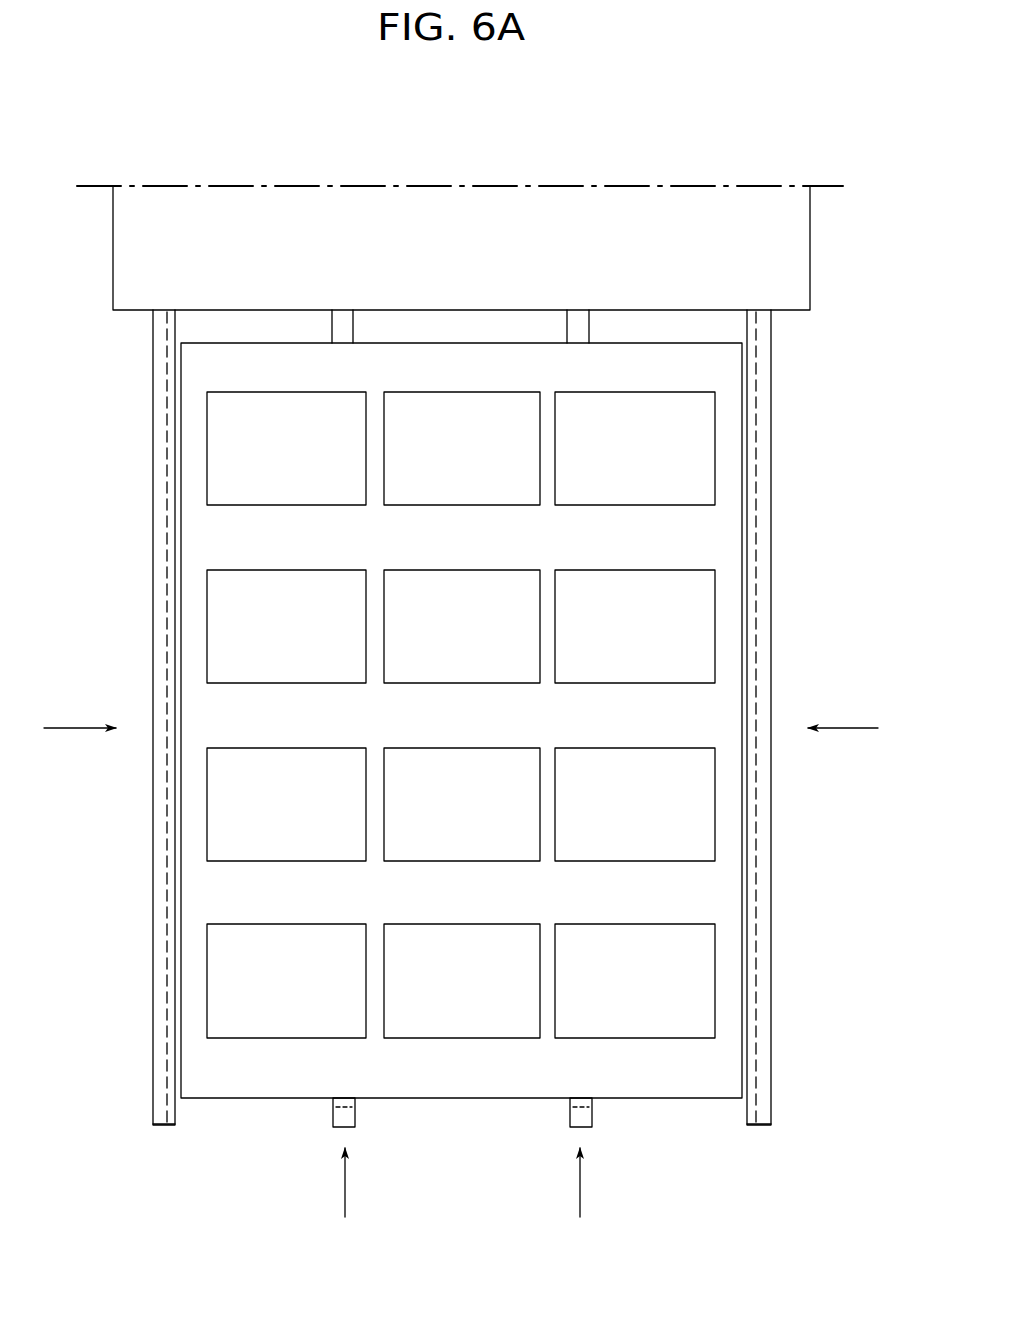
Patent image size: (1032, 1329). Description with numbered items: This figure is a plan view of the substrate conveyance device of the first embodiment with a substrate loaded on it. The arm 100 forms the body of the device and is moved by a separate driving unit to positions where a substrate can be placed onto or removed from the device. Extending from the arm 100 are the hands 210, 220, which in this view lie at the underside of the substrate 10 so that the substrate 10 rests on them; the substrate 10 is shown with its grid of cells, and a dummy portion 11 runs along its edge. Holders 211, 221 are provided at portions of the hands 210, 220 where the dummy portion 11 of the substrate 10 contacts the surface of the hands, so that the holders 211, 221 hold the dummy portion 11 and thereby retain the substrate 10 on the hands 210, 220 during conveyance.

The arm 100 is at (812, 252).
The hand 220 is at (343, 330).
The substrate 10 is at (181, 478).
The dummy portion 11 is at (193, 628).
The hand 210 is at (153, 942).
The holder 211 is at (176, 1125).
The holder 221 is at (570, 1122).